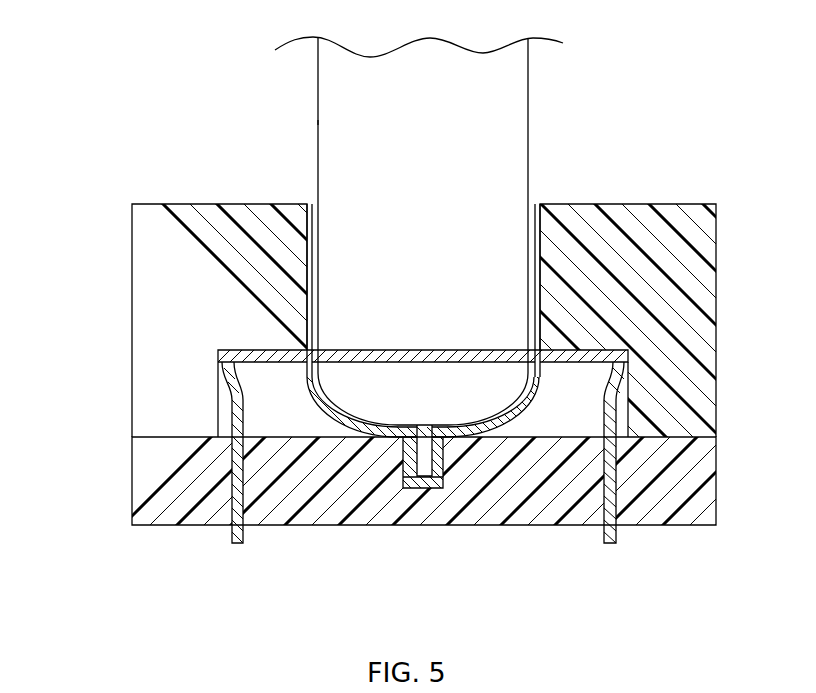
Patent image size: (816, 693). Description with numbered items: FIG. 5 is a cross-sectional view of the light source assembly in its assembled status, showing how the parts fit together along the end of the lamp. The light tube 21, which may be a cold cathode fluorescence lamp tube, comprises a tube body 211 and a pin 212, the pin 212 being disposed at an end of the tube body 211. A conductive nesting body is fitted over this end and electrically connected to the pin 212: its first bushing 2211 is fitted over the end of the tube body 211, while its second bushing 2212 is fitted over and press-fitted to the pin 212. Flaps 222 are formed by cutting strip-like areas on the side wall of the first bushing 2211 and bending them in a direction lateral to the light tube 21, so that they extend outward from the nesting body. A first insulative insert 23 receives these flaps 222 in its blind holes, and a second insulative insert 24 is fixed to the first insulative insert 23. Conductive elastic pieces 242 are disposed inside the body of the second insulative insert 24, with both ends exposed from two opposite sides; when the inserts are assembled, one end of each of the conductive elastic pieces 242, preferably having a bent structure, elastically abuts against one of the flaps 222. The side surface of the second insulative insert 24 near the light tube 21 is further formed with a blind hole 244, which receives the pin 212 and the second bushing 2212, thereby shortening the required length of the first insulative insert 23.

The light tube 21 is at (472, 323).
The tube body 211 is at (503, 122).
The pin 212 is at (440, 452).
The flaps 222 is at (330, 407).
The first bushing 2211 is at (310, 400).
The second bushing 2212 is at (407, 438).
The first insulative insert 23 is at (690, 197).
The second insulative insert 24 is at (692, 543).
The conductive elastic pieces 242 is at (233, 487).
The blind hole 244 is at (421, 482).